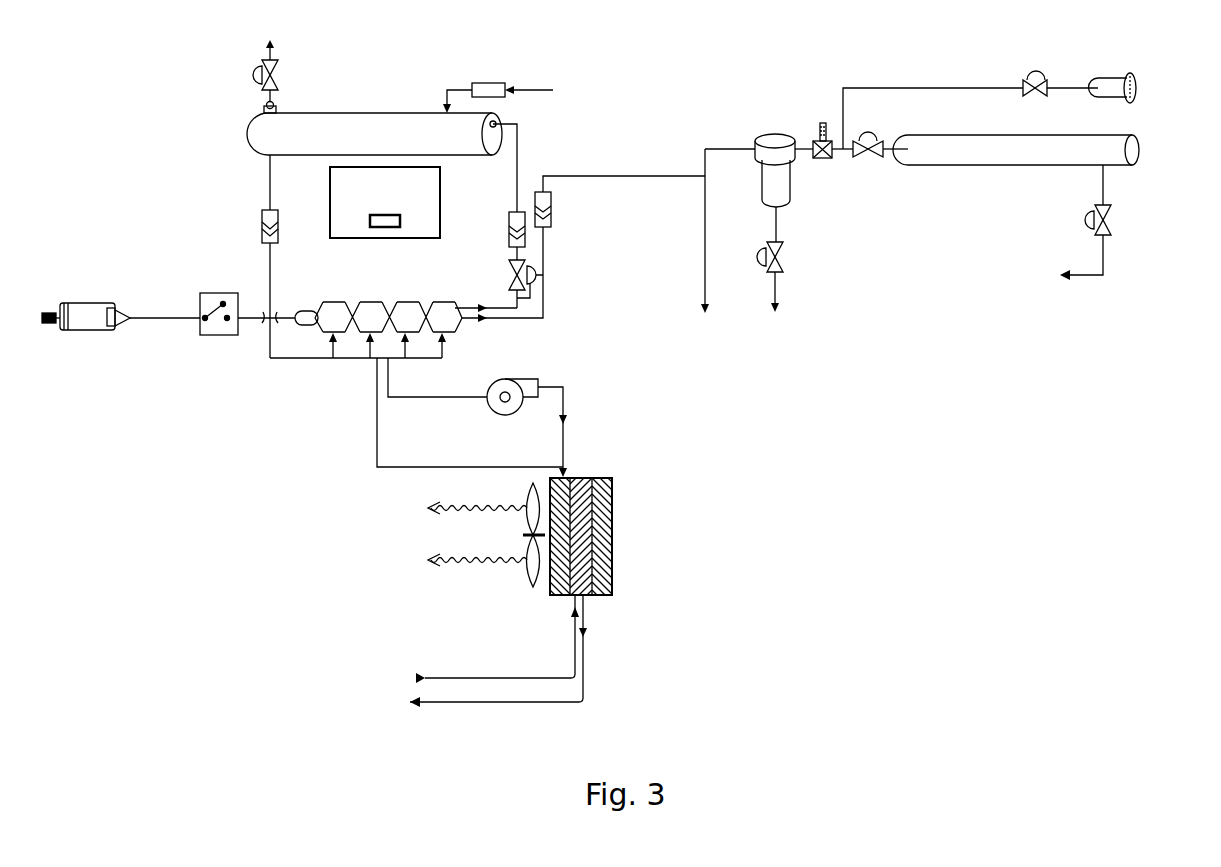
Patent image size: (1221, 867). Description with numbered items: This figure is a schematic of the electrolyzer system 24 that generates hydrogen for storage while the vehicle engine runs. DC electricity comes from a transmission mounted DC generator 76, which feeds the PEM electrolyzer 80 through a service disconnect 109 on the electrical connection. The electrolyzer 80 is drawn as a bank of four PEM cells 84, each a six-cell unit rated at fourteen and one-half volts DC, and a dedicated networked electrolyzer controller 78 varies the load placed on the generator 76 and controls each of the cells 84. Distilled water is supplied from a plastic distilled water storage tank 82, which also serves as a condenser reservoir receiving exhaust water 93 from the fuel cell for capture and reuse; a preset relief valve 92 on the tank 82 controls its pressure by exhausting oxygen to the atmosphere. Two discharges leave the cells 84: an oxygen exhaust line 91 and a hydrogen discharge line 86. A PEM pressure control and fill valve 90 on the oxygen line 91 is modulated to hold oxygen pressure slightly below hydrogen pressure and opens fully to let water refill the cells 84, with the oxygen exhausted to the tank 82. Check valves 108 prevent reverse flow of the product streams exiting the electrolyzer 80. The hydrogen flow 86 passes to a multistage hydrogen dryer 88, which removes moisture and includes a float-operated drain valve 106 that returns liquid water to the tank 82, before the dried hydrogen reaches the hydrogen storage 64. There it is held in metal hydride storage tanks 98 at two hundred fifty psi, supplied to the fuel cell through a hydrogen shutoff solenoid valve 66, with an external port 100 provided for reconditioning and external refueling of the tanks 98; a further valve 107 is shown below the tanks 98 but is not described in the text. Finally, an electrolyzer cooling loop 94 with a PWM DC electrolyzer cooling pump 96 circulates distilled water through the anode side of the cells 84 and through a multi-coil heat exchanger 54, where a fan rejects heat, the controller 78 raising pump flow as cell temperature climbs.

The electrolyzer system 24 is at (160, 100).
The multi-coil heat exchanger 54 is at (612, 522).
The hydrogen storage 64 is at (975, 180).
The hydrogen shutoff solenoid valve 66 is at (823, 158).
The transmission mounted DC generator 76 is at (90, 303).
The electrolyzer controller 78 is at (385, 202).
The PEM electrolyzer 80 is at (460, 300).
The distilled water storage tank 82 is at (374, 134).
The PEM cells 84 is at (455, 332).
The hydrogen discharge line 86 is at (503, 322).
The multistage hydrogen dryer 88 is at (776, 133).
The PEM pressure control and fill valve 90 is at (510, 262).
The oxygen exhaust line 91 is at (503, 305).
The preset relief valve 92 is at (249, 76).
The exhaust water 93 is at (530, 89).
The electrolyzer cooling loop 94 is at (410, 397).
The electrolyzer cooling pump 96 is at (505, 415).
The metal hydride storage tanks 98 is at (1120, 135).
The external port 100 is at (1112, 78).
The dryer drain valve 106 is at (780, 257).
The tank drain valve 107 is at (1112, 220).
The check valves 108 is at (262, 228).
The service disconnect 109 is at (218, 335).